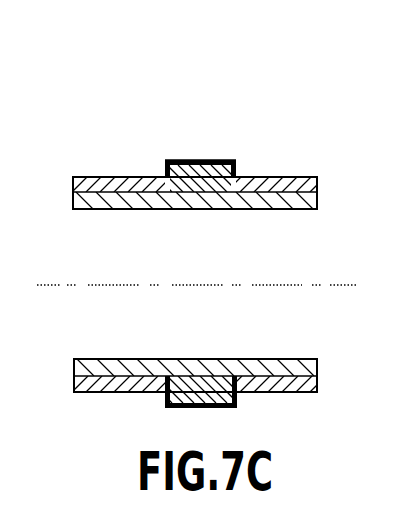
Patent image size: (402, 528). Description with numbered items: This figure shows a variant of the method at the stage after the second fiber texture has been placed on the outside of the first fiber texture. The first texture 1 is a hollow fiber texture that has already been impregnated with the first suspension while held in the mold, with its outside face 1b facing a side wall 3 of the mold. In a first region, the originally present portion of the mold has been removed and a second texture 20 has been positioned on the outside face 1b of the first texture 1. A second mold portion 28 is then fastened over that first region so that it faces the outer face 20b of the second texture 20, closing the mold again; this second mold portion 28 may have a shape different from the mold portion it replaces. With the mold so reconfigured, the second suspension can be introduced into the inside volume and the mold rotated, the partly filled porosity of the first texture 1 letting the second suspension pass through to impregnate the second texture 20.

The first texture 1 is at (138, 201).
The outside face of the first texture 1b is at (133, 190).
The side wall of the mold 3 is at (308, 185).
The second texture 20 is at (205, 184).
The outer face of the second fiber texture 20b is at (219, 158).
The second mold portion 28 is at (180, 158).